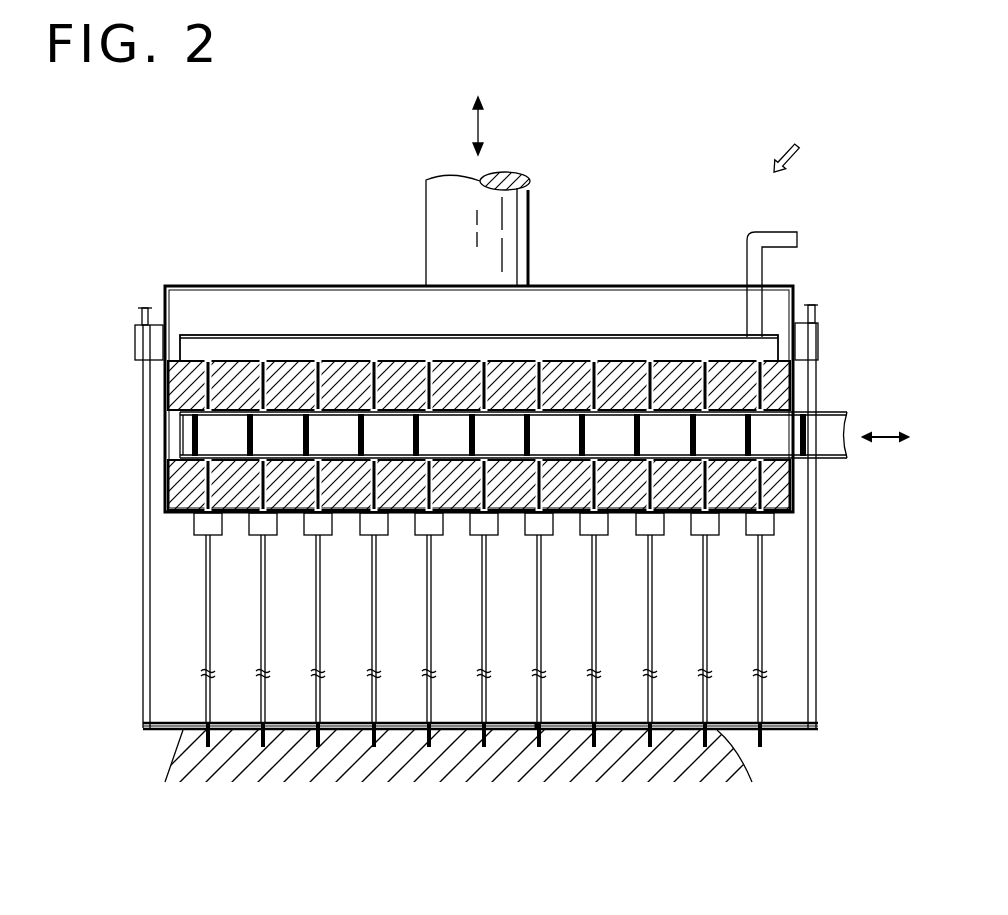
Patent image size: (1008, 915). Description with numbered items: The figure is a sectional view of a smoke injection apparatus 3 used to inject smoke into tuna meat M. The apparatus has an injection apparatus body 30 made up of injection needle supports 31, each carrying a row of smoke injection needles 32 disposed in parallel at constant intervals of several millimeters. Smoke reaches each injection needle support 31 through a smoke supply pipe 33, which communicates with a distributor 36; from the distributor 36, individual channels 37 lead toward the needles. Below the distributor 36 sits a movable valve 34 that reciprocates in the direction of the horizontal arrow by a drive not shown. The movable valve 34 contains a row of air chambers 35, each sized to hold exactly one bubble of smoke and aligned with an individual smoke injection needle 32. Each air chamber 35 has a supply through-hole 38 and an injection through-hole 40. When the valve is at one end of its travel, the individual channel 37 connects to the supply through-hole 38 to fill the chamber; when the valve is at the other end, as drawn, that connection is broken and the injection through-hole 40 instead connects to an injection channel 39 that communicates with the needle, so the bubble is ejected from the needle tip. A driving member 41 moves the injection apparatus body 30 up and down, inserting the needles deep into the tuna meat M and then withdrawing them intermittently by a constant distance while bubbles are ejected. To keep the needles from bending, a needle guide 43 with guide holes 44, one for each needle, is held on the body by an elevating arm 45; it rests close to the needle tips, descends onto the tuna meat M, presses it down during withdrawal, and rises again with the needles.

The smoke injection apparatus 3 is at (789, 148).
The injection apparatus body 30 is at (667, 282).
The injection needle support 31 is at (511, 520).
The smoke injection needle 32 is at (206, 628).
The smoke supply pipe 33 is at (780, 230).
The movable valve 34 is at (525, 358).
The air chamber 35 is at (285, 427).
The distributor 36 is at (545, 335).
The individual channel 37 is at (440, 405).
The supply through-hole 38 is at (443, 414).
The injection channel 39 is at (638, 480).
The injection through-hole 40 is at (600, 450).
The driving member 41 is at (510, 217).
The needle guide 43 is at (742, 720).
The guide hole 44 is at (540, 722).
The elevating arm 45 is at (817, 590).
The tuna meat M is at (745, 757).